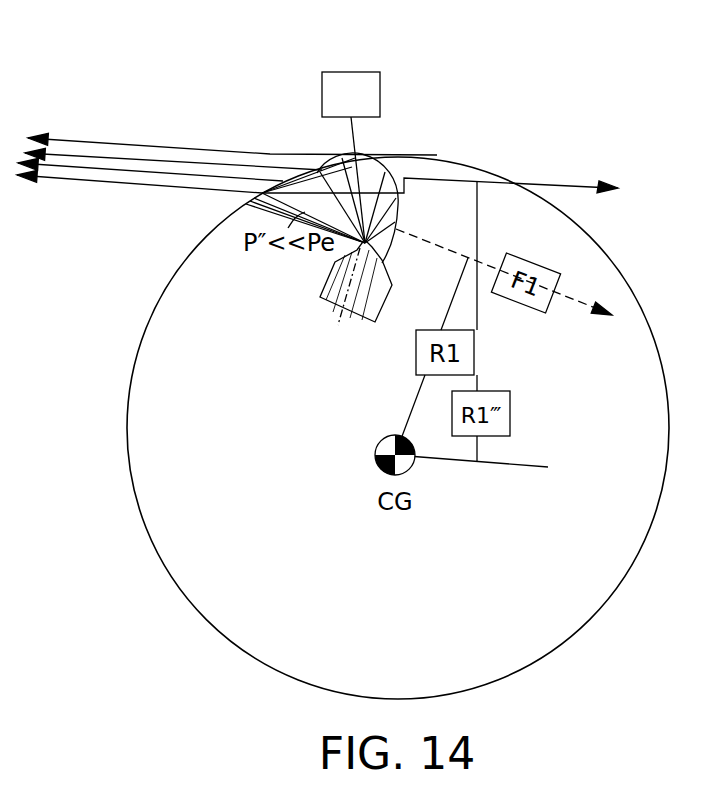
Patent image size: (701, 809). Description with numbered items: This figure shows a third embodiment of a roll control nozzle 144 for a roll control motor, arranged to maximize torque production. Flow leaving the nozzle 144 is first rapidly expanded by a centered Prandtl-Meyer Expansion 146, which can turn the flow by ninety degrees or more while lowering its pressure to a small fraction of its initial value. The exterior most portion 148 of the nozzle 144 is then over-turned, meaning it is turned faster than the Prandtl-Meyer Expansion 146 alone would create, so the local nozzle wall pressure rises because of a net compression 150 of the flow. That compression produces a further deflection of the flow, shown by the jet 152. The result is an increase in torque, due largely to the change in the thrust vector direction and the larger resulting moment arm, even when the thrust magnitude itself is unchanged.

The roll control nozzle 144 is at (327, 286).
The centered Prandtl-Meyer Expansion 146 is at (391, 199).
The exterior most portion of the nozzle 148 is at (366, 240).
The net compression 150 is at (317, 171).
The jet 152 is at (167, 147).